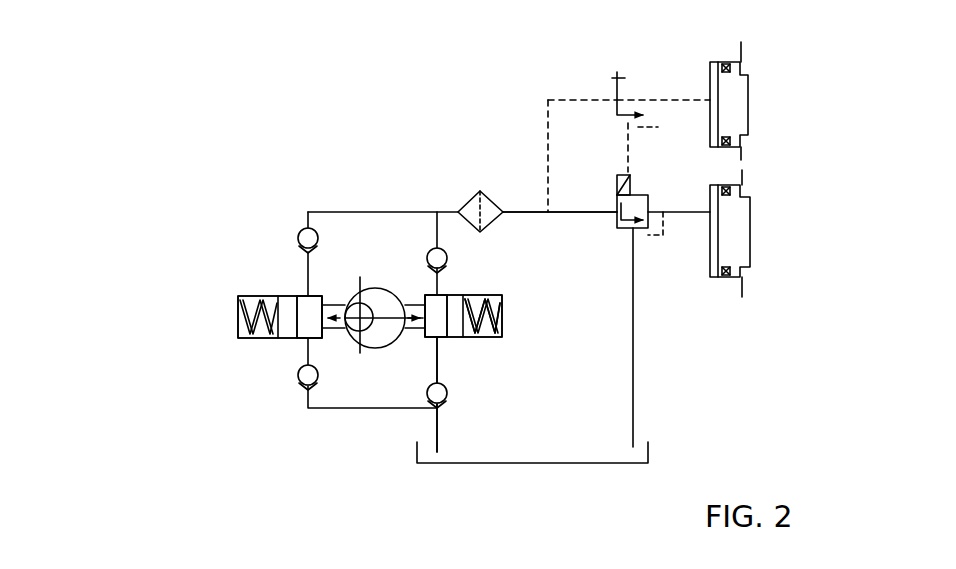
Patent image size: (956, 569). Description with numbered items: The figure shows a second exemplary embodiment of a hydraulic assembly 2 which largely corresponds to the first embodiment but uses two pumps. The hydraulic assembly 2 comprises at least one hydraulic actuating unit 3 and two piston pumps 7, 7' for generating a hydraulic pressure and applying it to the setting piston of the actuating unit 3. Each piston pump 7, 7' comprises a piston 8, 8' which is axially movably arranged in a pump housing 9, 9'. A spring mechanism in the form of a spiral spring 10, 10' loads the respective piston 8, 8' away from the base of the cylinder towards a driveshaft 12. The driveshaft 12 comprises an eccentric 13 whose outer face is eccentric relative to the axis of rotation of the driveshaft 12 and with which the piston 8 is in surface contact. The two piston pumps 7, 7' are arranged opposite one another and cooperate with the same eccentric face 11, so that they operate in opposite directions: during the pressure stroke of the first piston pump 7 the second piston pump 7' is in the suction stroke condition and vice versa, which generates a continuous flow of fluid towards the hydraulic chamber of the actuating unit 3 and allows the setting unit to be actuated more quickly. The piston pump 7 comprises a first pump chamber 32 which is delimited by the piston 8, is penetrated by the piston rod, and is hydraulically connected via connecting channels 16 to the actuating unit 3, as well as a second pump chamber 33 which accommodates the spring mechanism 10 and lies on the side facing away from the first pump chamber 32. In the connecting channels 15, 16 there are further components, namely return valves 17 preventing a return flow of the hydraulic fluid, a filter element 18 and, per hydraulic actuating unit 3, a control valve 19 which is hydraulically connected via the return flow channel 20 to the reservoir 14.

The hydraulic assembly 2 is at (352, 114).
The hydraulic actuating unit 3 is at (758, 59).
The piston pump 7 is at (482, 292).
The second piston pump 7' is at (256, 290).
The piston 8 is at (423, 343).
The piston of second piston pump 8' is at (318, 294).
The pump housing 9 is at (477, 329).
The pump housing of second piston pump 9' is at (266, 341).
The spiral spring 10 is at (508, 316).
The spiral spring of second piston pump 10' is at (230, 319).
The eccentric face 11 is at (375, 349).
The driveshaft 12 is at (365, 308).
The eccentric 13 is at (390, 303).
The reservoir 14 is at (547, 462).
The connecting channel 15 is at (438, 363).
The connecting channels 16 is at (575, 202).
The return valves 17 is at (447, 258).
The filter element 18 is at (476, 190).
The control valve 19 is at (642, 67).
The return flow channel 20 is at (633, 327).
The first pump chamber 32 is at (430, 340).
The second pump chamber 33 is at (490, 296).